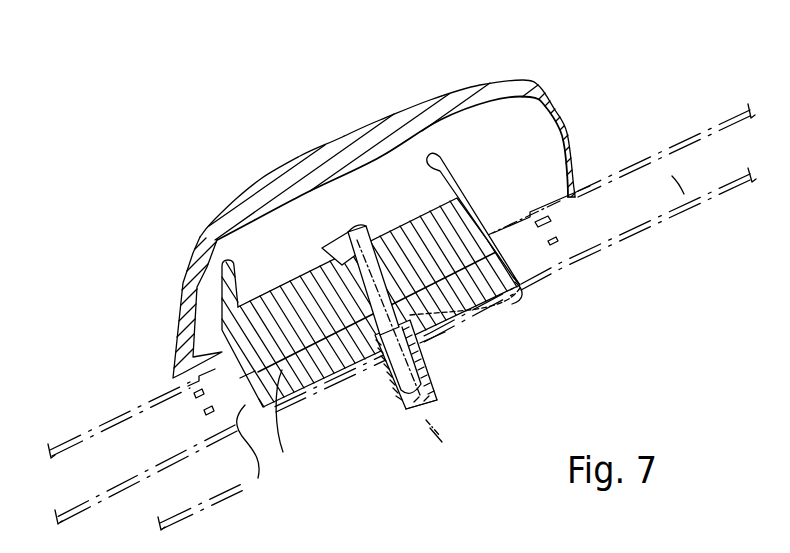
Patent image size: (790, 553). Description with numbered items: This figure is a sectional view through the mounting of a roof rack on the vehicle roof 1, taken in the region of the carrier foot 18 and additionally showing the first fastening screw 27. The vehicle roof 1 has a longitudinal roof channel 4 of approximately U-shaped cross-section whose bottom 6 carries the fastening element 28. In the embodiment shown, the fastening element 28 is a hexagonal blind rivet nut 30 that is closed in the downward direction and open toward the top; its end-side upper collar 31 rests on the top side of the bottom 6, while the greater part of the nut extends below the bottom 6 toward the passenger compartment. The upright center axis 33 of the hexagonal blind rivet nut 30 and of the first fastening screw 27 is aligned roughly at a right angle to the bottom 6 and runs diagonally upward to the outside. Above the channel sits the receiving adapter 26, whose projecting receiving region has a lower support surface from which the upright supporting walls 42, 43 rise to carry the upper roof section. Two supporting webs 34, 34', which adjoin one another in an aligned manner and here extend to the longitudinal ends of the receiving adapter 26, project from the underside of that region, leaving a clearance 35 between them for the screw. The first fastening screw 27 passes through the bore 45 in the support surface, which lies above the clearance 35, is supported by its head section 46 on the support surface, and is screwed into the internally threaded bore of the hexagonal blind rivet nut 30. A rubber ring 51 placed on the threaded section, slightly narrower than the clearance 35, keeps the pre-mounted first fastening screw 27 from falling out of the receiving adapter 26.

The vehicle roof 1 is at (672, 146).
The roof channel 4 is at (690, 198).
The bottom 6 is at (313, 383).
The carrier foot 18 is at (487, 86).
The receiving adapter 26 is at (487, 215).
The first fastening screw 27 is at (322, 292).
The fastening element 28 is at (385, 383).
The hexagonal blind rivet nut 30 is at (413, 417).
The upper collar 31 is at (430, 337).
The center axis 33 is at (290, 148).
The supporting web 34 is at (264, 430).
The supporting web 34' is at (543, 302).
The clearance 35 is at (378, 282).
The supporting wall 42 is at (190, 262).
The supporting wall 43 is at (455, 167).
The bore 45 is at (330, 243).
The head section 46 is at (352, 228).
The rubber ring 51 is at (453, 313).